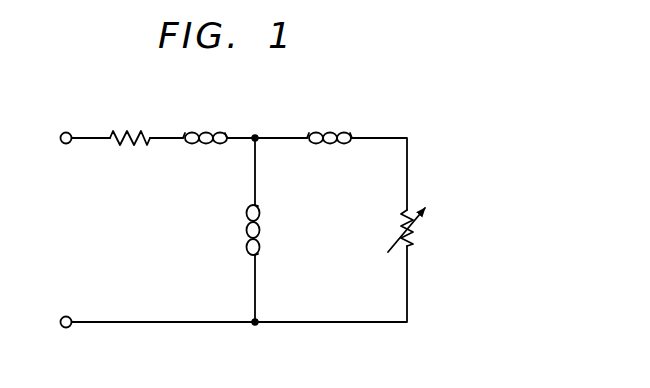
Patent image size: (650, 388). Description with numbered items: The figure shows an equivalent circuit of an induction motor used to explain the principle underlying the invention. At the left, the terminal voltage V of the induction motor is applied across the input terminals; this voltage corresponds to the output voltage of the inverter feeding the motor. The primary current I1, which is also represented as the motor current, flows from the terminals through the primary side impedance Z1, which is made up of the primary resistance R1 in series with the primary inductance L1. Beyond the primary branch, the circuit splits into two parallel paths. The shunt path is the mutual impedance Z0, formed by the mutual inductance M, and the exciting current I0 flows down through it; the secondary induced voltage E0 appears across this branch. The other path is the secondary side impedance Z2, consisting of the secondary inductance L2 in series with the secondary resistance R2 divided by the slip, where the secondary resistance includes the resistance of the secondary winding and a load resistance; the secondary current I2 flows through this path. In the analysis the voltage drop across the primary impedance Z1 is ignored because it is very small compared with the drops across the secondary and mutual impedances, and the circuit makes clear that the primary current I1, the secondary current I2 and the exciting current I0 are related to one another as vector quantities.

The terminal voltage V is at (66, 312).
The primary impedance Z1 is at (222, 105).
The primary resistance R1 is at (130, 126).
The primary inductance L1 is at (205, 126).
The primary current I1 is at (106, 162).
The secondary induced voltage E0 is at (243, 143).
The mutual impedance Z0 is at (290, 193).
The mutual inductance M is at (267, 226).
The exciting current I0 is at (269, 265).
The secondary inductance L2 is at (329, 126).
The secondary impedance Z2 is at (407, 163).
The secondary resistance R2 is at (455, 197).
The secondary current I2 is at (392, 203).